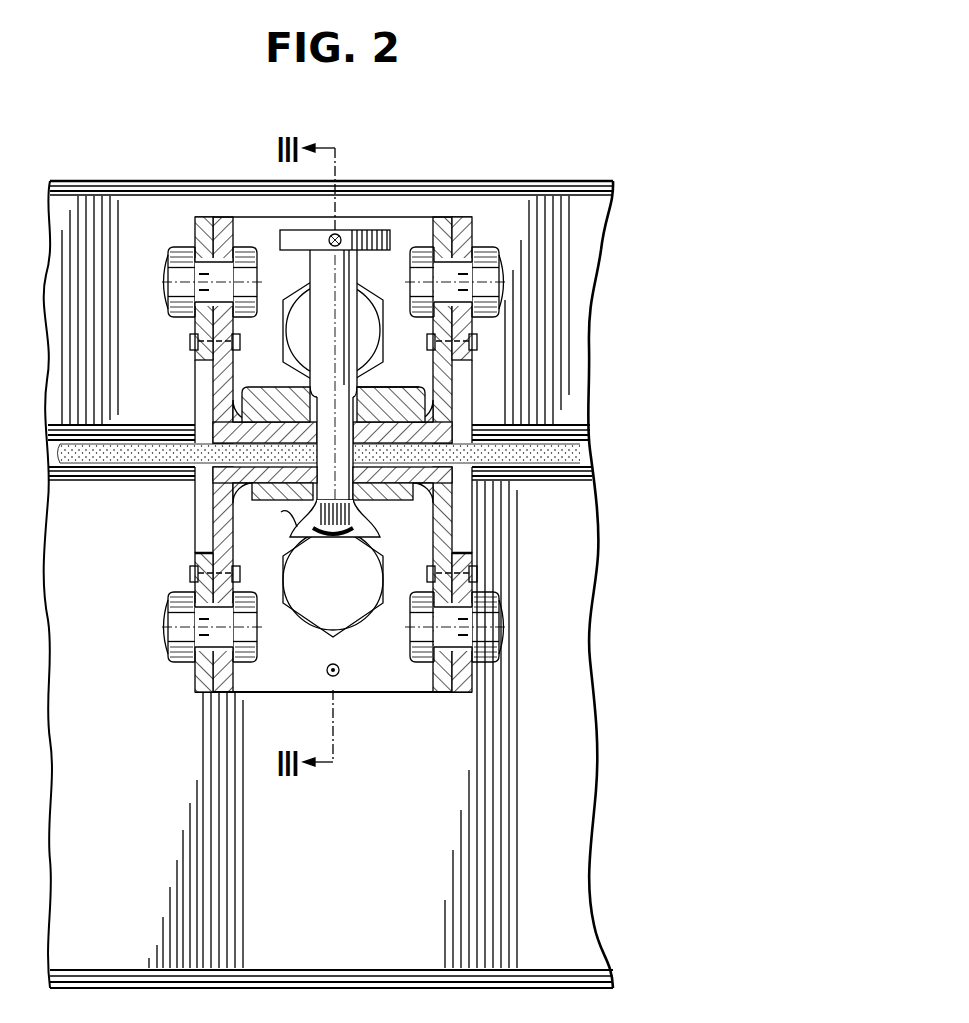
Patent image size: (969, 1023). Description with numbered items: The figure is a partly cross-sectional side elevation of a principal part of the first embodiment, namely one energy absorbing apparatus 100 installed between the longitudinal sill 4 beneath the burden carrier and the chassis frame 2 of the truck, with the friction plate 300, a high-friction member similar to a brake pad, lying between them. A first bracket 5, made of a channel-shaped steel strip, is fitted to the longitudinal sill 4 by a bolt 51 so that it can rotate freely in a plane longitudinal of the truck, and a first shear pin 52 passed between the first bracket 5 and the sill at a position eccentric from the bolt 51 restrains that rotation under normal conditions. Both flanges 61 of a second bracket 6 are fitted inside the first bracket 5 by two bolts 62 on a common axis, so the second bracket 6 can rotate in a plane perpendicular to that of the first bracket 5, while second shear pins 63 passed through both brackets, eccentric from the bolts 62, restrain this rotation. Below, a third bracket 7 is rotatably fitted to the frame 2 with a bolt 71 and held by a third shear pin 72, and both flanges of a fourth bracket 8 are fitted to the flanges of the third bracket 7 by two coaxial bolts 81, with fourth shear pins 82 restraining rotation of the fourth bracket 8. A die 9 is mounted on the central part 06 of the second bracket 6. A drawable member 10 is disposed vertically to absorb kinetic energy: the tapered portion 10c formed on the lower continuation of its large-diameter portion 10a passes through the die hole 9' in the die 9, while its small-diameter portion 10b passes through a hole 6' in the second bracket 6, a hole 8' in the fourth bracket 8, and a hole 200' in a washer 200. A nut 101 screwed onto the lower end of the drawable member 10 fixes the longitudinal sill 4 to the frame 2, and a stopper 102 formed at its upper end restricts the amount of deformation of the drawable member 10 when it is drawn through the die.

The chassis frame 2 is at (580, 654).
The longitudinal sill 4 is at (563, 193).
The first bracket 5 is at (203, 230).
The second bracket 6 is at (346, 330).
The hole in the second bracket 6' is at (277, 404).
The central part of the second bracket 06 is at (359, 412).
The third bracket 7 is at (205, 684).
The fourth bracket 8 is at (317, 579).
The hole in the fourth bracket 8' is at (332, 510).
The die 9 is at (416, 368).
The die hole 9' is at (388, 368).
The drawable member 10 is at (308, 336).
The large-diameter portion 10a is at (348, 268).
The small-diameter portion 10b is at (381, 483).
The tapered portion 10c is at (311, 378).
The bolt 51 is at (297, 303).
The first shear pin 52 is at (343, 236).
The flanges of the second bracket 61 is at (440, 228).
The bolts 62 is at (168, 283).
The second shear pins 63 is at (189, 341).
The bolt 71 is at (357, 603).
The third shear pin 72 is at (326, 671).
The bolts 81 is at (163, 625).
The fourth shear pins 82 is at (192, 572).
The energy absorbing apparatus 100 is at (537, 347).
The nut 101 is at (375, 520).
The stopper 102 is at (300, 233).
The washer 200 is at (268, 538).
The hole in the washer 200' is at (326, 556).
The friction plate 300 is at (580, 452).